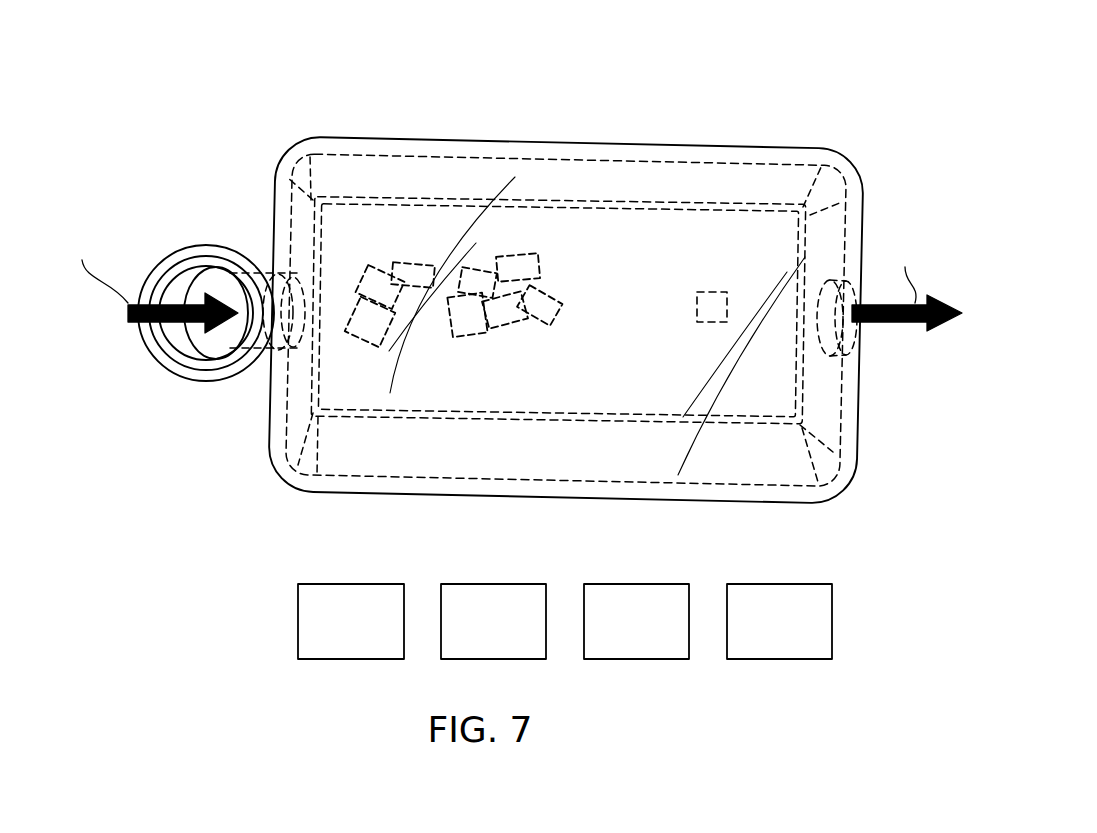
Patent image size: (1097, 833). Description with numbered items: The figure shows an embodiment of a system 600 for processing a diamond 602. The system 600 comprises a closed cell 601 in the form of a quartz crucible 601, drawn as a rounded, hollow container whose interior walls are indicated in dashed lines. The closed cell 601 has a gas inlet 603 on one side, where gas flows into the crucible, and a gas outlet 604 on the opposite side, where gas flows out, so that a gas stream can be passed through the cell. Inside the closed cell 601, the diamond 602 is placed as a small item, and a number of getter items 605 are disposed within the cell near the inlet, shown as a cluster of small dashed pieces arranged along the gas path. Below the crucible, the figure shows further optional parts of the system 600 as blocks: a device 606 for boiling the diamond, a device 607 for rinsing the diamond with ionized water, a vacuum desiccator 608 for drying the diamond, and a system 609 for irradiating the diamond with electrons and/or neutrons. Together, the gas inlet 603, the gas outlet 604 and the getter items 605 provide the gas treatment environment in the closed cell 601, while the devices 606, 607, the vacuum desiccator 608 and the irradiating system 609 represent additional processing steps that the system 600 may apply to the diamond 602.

The system for processing a diamond 600 is at (181, 92).
The closed cell 601 is at (340, 487).
The diamond 602 is at (713, 292).
The gas inlet 603 is at (278, 284).
The gas outlet 604 is at (833, 337).
The getter items 605 is at (373, 277).
The device for boiling the diamond 606 is at (351, 621).
The device for rinsing the diamond with ionized water 607 is at (493, 621).
The vacuum desiccator 608 is at (636, 621).
The system for irradiating the diamond 609 is at (779, 621).